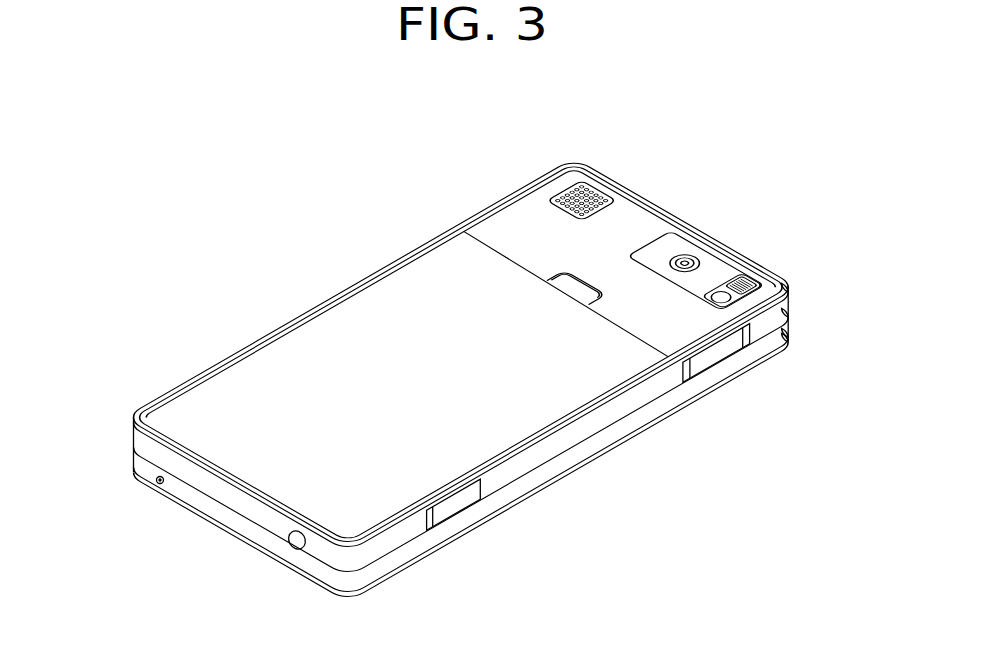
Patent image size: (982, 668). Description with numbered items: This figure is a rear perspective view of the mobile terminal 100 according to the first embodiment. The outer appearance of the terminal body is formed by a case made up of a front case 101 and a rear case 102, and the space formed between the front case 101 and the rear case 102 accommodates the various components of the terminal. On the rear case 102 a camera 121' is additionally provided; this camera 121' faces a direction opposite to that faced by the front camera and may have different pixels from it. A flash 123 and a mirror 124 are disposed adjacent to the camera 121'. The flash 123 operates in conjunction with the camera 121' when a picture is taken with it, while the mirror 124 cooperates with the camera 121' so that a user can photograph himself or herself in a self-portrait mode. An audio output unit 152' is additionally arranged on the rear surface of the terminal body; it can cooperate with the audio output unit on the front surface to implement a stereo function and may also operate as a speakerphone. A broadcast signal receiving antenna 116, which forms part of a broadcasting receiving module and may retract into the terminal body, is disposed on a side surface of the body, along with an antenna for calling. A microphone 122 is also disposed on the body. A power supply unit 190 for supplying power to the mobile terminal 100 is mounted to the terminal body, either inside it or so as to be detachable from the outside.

The mobile terminal 100 is at (422, 212).
The front case 101 is at (783, 338).
The rear case 102 is at (783, 312).
The broadcast signal receiving antenna 116 is at (298, 541).
The camera 121' is at (696, 245).
The microphone 122 is at (157, 481).
The flash 123 is at (748, 282).
The mirror 124 is at (717, 290).
The audio output unit 152' is at (612, 176).
The power supply unit 190 is at (383, 305).